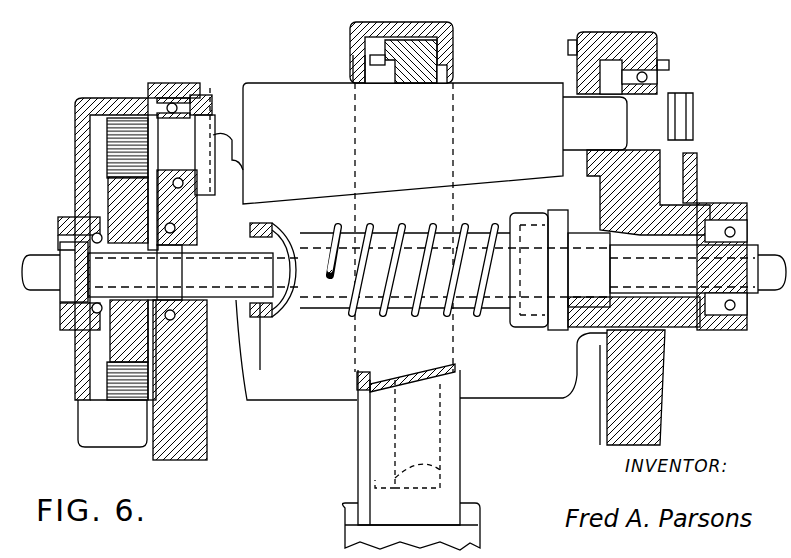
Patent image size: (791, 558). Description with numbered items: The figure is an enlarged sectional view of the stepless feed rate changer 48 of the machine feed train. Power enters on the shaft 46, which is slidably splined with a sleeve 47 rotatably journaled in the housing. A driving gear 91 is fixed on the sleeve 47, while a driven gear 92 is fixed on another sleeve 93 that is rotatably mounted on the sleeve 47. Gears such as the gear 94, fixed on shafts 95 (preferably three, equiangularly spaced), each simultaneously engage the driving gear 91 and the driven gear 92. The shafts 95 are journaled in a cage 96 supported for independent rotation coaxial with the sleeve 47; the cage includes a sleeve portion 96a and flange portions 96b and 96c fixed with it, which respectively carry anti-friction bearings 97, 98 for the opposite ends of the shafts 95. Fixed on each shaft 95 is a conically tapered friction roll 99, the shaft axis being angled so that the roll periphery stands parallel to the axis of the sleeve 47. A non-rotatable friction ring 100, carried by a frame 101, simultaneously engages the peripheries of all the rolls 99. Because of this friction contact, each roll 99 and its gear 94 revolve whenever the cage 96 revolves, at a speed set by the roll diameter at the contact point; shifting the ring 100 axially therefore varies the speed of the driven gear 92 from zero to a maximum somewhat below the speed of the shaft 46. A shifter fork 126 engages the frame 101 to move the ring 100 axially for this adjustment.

The shaft 46 is at (770, 260).
The sleeve 47 is at (276, 285).
The stepless feed rate changer 48 is at (211, 90).
The driving gear 91 is at (122, 342).
The driven gear 92 is at (76, 386).
The sleeve 93 is at (58, 222).
The gear 94 is at (122, 144).
The shaft 95 is at (137, 140).
The cage 96 is at (208, 418).
The sleeve portion 96a is at (335, 305).
The flange portion 96b is at (188, 455).
The flange portion 96c is at (615, 405).
The anti-friction bearing 97 is at (160, 100).
The anti-friction bearing 98 is at (658, 60).
The conically tapered friction roll 99 is at (270, 92).
The friction ring 100 is at (414, 83).
The frame 101 is at (455, 34).
The shifter fork 126 is at (480, 511).